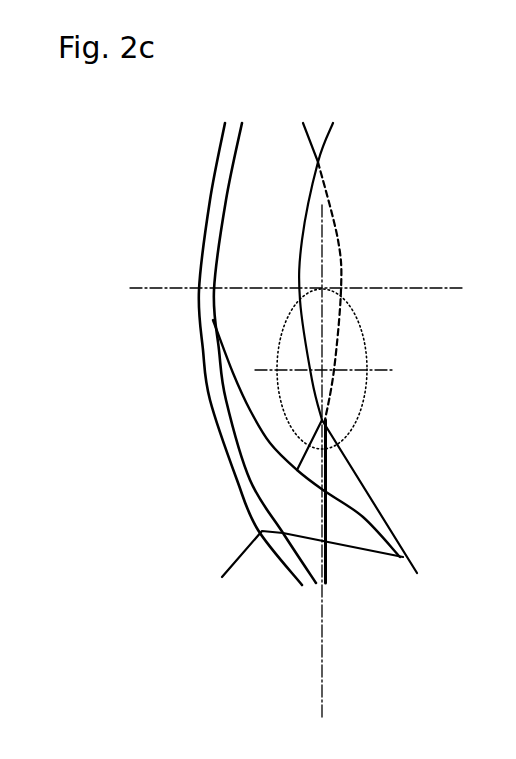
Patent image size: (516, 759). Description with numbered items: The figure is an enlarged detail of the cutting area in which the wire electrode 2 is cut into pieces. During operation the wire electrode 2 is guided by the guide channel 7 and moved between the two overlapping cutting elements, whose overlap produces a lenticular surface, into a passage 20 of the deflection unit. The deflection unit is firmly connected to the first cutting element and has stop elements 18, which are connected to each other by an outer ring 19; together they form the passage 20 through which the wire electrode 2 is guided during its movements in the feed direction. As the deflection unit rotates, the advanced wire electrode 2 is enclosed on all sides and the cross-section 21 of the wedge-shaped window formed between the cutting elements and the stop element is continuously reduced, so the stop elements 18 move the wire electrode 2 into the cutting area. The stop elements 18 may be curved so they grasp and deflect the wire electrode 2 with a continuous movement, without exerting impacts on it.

The wire electrode 2 is at (328, 560).
The guide channel 7 is at (352, 430).
The stop elements 18 is at (199, 354).
The outer ring 19 is at (203, 248).
The passage 20 is at (265, 175).
The cross-section 21 is at (343, 493).